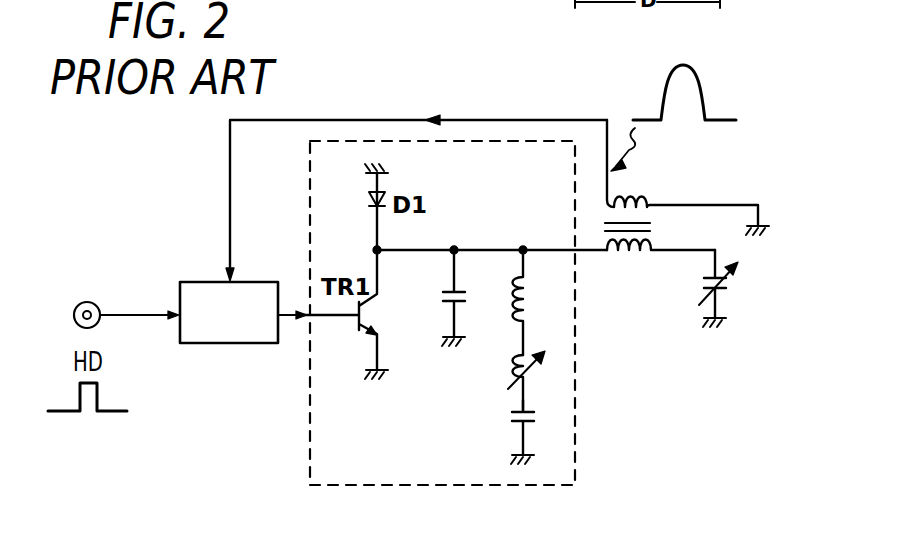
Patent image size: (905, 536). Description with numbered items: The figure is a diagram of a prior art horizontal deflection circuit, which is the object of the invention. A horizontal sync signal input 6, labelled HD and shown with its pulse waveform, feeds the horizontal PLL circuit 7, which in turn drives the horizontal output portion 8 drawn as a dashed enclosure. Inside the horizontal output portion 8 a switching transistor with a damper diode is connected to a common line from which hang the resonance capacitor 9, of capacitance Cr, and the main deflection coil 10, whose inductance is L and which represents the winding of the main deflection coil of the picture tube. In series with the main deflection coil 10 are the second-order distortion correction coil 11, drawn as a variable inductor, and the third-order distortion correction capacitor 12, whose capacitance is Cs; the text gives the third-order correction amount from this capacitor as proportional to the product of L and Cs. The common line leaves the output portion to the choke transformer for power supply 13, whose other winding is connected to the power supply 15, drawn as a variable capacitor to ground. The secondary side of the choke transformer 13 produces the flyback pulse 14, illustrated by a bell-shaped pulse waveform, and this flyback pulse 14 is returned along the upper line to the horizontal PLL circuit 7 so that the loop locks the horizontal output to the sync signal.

The horizontal sync signal input 6 is at (95, 300).
The horizontal PLL circuit 7 is at (262, 282).
The horizontal output portion 8 is at (308, 436).
The resonance capacitor 9 is at (437, 298).
The main deflection coil 10 is at (514, 303).
The second-order distortion correction coil 11 is at (510, 378).
The third-order distortion correction capacitor 12 is at (509, 420).
The choke transformer for power supply 13 is at (622, 257).
The flyback pulse 14 is at (229, 195).
The power supply 15 is at (733, 289).